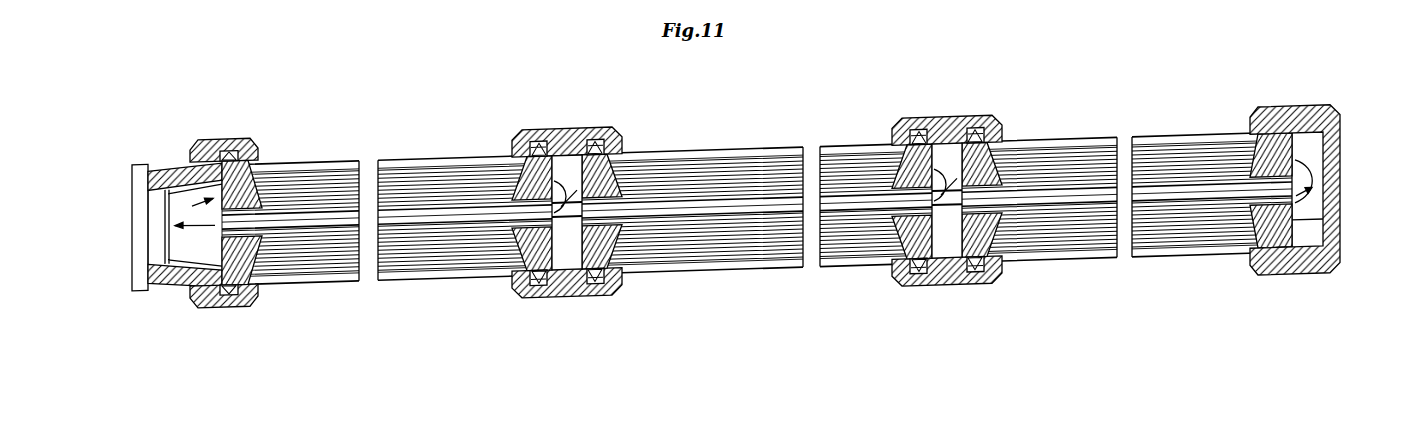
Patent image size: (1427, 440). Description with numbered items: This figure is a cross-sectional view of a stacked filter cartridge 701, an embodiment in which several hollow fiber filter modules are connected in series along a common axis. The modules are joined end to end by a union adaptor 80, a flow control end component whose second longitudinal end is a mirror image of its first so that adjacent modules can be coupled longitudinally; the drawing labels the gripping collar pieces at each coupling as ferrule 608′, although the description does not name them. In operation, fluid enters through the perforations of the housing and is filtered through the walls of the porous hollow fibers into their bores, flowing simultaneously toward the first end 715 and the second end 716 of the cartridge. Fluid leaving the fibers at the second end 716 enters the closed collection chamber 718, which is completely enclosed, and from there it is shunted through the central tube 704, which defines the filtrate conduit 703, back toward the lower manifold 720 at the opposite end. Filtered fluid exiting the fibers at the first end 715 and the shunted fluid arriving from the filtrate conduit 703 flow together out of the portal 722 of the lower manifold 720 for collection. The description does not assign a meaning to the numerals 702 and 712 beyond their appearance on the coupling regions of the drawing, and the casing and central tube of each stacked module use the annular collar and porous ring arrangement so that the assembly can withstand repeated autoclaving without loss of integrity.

The stacked filter cartridge 701 is at (960, 74).
The hose section 702 is at (450, 157).
The filtrate conduit 703 is at (828, 180).
The central tube 704 is at (325, 207).
The seal ring 712 is at (531, 147).
The first end 715 is at (198, 165).
The second end 716 is at (1310, 233).
The closed collection chamber 718 is at (571, 237).
The lower manifold 720 is at (186, 240).
The portal 722 is at (132, 197).
The union adaptor 80 is at (568, 130).
The ferrule 608′ is at (263, 287).